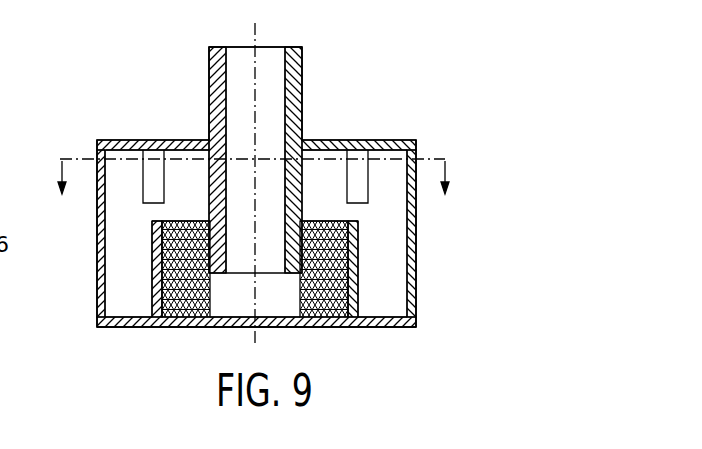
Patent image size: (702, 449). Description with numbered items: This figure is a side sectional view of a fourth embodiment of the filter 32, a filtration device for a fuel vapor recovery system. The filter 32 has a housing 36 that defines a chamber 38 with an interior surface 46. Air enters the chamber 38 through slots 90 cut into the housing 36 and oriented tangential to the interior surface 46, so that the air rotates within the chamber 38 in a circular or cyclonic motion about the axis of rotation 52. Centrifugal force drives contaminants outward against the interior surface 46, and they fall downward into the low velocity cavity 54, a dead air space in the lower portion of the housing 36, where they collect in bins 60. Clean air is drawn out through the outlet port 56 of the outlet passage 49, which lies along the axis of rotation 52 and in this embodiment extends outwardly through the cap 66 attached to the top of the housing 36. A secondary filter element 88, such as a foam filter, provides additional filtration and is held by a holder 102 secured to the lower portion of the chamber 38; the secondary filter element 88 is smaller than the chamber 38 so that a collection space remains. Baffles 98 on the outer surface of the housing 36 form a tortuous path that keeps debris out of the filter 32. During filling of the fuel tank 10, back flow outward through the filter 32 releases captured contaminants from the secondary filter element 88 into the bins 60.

The filter 32 is at (317, 87).
The axis of rotation 52 is at (261, 35).
The slots 90 is at (97, 151).
The cap 66 is at (368, 140).
The fuel tank 10 is at (251, 193).
The housing 36 is at (96, 257).
The interior surface 46 is at (103, 233).
The chamber 38 is at (390, 228).
The outlet passage 49 is at (302, 186).
The outlet port 56 is at (292, 273).
The secondary filter element 88 is at (178, 310).
The holder 102 is at (355, 273).
The bins 60 is at (398, 270).
The low velocity cavity 54 is at (377, 308).
The baffles 98 is at (0, 367).